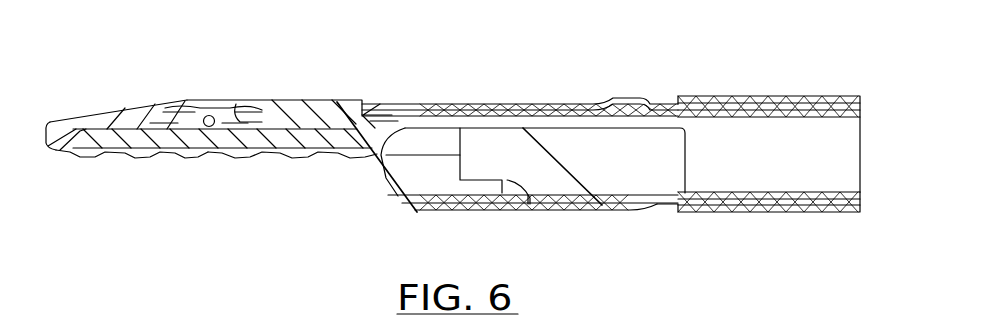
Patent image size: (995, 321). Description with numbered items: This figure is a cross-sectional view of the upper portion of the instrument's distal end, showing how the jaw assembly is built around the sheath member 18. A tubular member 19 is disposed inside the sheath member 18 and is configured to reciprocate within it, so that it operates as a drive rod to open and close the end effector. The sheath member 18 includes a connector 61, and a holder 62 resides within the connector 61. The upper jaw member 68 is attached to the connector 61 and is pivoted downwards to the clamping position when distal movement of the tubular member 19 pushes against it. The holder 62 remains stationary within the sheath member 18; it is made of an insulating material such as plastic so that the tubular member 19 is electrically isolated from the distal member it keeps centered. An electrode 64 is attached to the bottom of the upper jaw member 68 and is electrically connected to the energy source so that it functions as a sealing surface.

The electrode 64 is at (66, 121).
The upper jaw member 68 is at (212, 108).
The holder 62 is at (495, 147).
The connector 61 is at (568, 212).
The tubular member 19 is at (778, 148).
The sheath member 18 is at (754, 214).